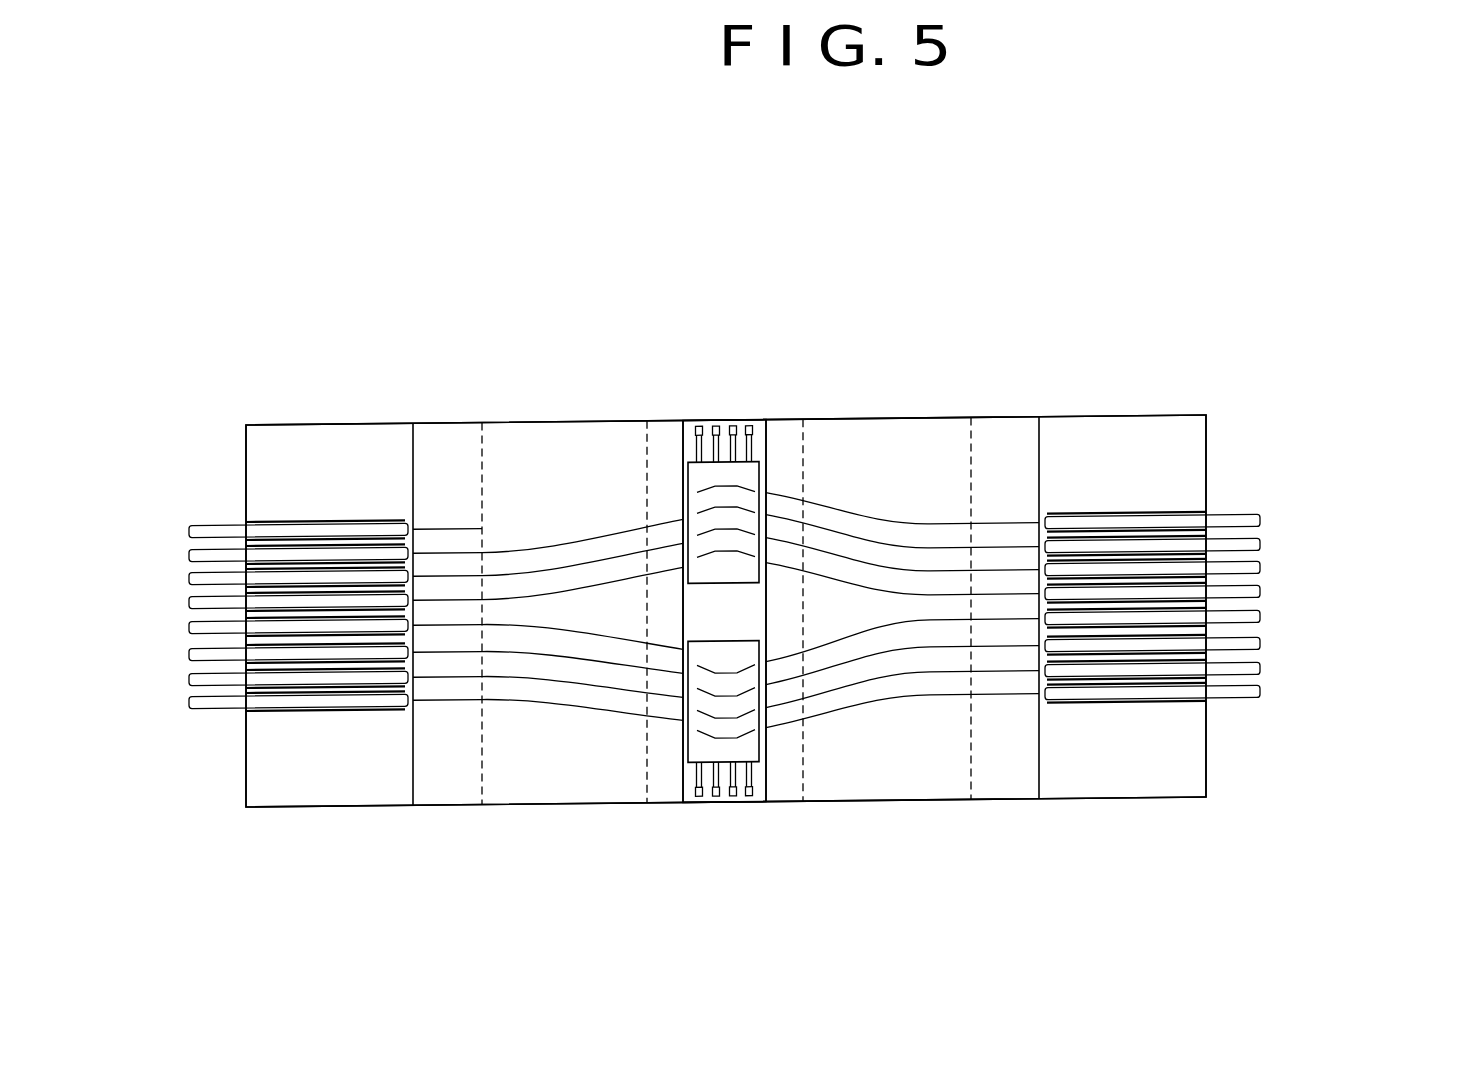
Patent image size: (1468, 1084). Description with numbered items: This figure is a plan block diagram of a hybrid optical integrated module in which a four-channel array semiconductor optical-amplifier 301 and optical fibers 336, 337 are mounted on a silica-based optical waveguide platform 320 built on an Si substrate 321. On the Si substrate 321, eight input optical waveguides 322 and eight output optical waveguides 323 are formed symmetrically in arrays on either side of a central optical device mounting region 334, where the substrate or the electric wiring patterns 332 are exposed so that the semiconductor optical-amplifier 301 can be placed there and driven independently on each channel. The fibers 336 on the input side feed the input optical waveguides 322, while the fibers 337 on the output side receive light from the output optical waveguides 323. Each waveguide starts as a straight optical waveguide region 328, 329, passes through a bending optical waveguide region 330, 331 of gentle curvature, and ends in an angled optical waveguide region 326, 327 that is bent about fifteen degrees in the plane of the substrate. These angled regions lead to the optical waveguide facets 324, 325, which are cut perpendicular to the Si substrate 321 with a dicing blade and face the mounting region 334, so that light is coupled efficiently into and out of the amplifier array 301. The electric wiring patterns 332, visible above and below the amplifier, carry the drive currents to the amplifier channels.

The 4-channel array semiconductor optical-amplifier 301 is at (762, 463).
The optical waveguide platform 320 is at (943, 800).
The Si substrate 321 is at (1140, 430).
The input optical waveguide 322 is at (455, 778).
The output optical waveguide 323 is at (990, 712).
The optical waveguide facet 324 is at (682, 420).
The optical waveguide facet 325 is at (768, 470).
The angled optical waveguide region 326 is at (663, 440).
The angled optical waveguide region 327 is at (790, 483).
The straight optical waveguide region 328 is at (443, 442).
The straight optical waveguide region 329 is at (1008, 435).
The bending optical waveguide region 330 is at (533, 442).
The bending optical waveguide region 331 is at (922, 433).
The electric wiring pattern 332 is at (697, 777).
The optical device mounting region 334 is at (712, 420).
The optical fiber 336 is at (215, 710).
The optical fiber 337 is at (1238, 698).